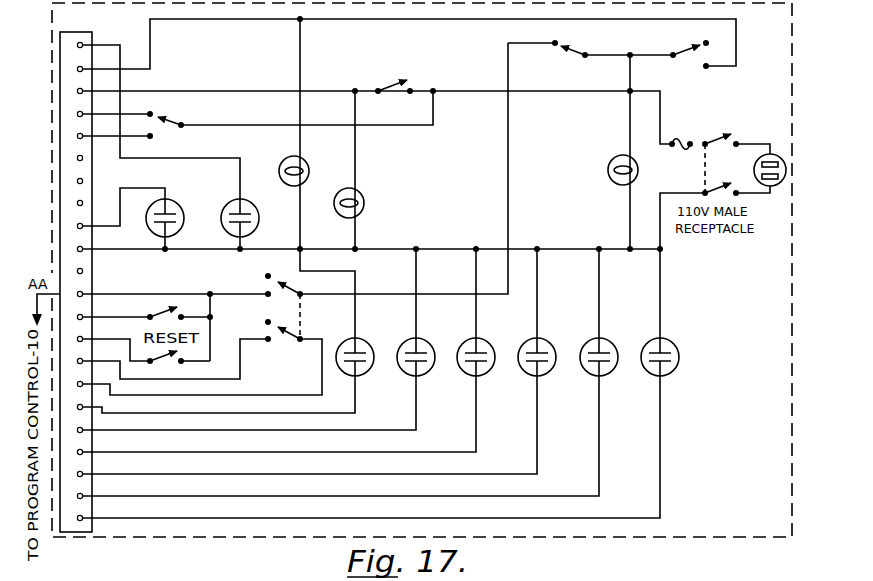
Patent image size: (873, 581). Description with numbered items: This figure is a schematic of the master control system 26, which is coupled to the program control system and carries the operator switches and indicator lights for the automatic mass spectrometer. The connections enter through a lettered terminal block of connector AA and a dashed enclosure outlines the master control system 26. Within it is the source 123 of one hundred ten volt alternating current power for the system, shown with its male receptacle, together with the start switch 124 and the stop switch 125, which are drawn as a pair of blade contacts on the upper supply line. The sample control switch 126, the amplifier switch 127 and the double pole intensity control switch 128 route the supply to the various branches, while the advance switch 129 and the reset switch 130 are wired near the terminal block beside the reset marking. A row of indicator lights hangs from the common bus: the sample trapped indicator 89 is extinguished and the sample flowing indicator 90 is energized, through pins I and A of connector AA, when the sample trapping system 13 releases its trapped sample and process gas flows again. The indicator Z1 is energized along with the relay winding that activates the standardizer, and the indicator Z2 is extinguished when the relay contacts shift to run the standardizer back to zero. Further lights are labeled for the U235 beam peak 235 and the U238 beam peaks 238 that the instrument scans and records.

The sample trapping system 13 is at (92, 282).
The master control system 26 is at (52, 81).
The sample trapped indicator 89 is at (176, 206).
The sample flowing indicator 90 is at (251, 206).
The source of 110 volt A.C. power 123 is at (775, 133).
The start switch 124 is at (693, 58).
The stop switch 125 is at (575, 50).
The sample control switch 126 is at (172, 123).
The amplifier switch 127 is at (393, 85).
The intensity control switch 128 is at (291, 316).
The advance switch 129 is at (158, 313).
The reset switch 130 is at (170, 365).
The U235 beam 235 is at (483, 374).
The U238 beam 238 is at (420, 374).
The indicator Z1 is at (607, 374).
The indicator Z2 is at (546, 374).